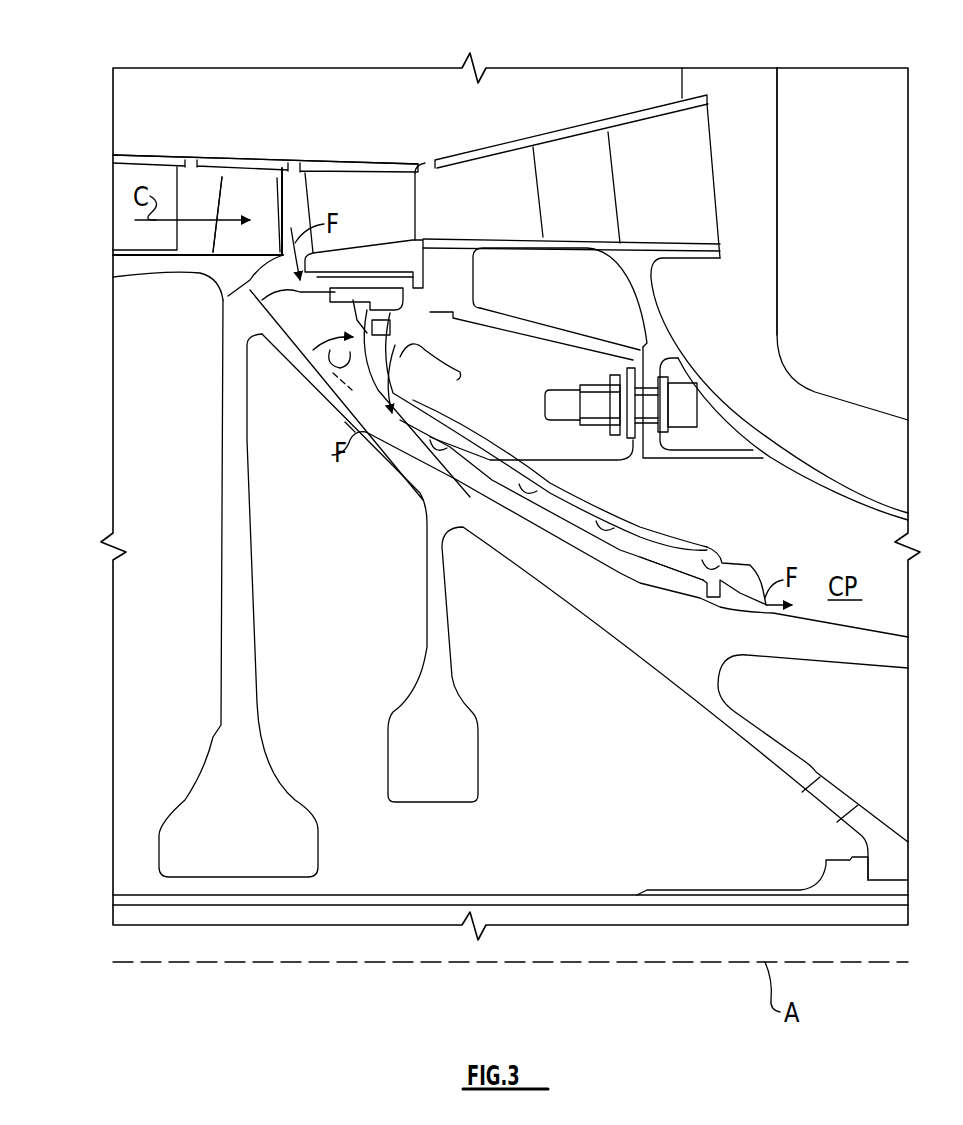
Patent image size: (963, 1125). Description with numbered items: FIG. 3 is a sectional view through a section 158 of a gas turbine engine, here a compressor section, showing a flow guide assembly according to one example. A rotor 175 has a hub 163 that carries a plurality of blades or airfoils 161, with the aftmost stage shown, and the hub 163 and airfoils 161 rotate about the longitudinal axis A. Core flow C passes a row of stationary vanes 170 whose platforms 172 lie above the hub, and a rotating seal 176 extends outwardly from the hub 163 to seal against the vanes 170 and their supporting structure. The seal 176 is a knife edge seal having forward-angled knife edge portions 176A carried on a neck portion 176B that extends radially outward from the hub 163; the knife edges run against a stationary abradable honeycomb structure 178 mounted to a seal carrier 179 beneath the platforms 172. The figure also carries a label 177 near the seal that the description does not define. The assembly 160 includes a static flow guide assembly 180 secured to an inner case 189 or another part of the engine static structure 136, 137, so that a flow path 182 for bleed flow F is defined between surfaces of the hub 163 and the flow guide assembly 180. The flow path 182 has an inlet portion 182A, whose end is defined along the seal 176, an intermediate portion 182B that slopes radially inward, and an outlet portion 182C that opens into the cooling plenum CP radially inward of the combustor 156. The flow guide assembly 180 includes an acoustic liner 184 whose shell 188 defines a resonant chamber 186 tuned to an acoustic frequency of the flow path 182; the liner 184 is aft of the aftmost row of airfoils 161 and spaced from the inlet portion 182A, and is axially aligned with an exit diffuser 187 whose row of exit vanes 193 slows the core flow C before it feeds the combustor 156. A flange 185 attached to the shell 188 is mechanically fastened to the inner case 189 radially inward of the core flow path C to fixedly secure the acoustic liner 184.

The section 158 is at (133, 62).
The engine static structure 136 is at (168, 90).
The outer case 137 is at (265, 159).
The combustor 156 is at (776, 94).
The blades or airfoils 161 is at (218, 193).
The assembly 160 is at (93, 185).
The exit diffuser 187 is at (575, 135).
The stationary vanes 170 is at (400, 207).
The platforms 172 is at (397, 253).
The exit vanes 193 is at (598, 193).
The rotor 175 is at (125, 273).
The abradable honeycomb structure 178 is at (222, 288).
The hub 163 is at (227, 320).
The knife edge portions 176A is at (400, 300).
The rotating seal 176 is at (312, 363).
The neck portion 176B is at (335, 395).
The flange 177 is at (345, 422).
The seal carrier 179 is at (523, 320).
The flow guide assembly 180 is at (478, 393).
The inlet portion 182A is at (546, 431).
The intermediate portion 182B is at (450, 447).
The flange 185 is at (530, 462).
The resonant chamber 186 is at (530, 492).
The acoustic liner 184 is at (575, 507).
The shell 188 is at (665, 535).
The outlet portion 182C is at (727, 560).
The flow path 182 is at (483, 478).
The inner case 189 is at (722, 402).